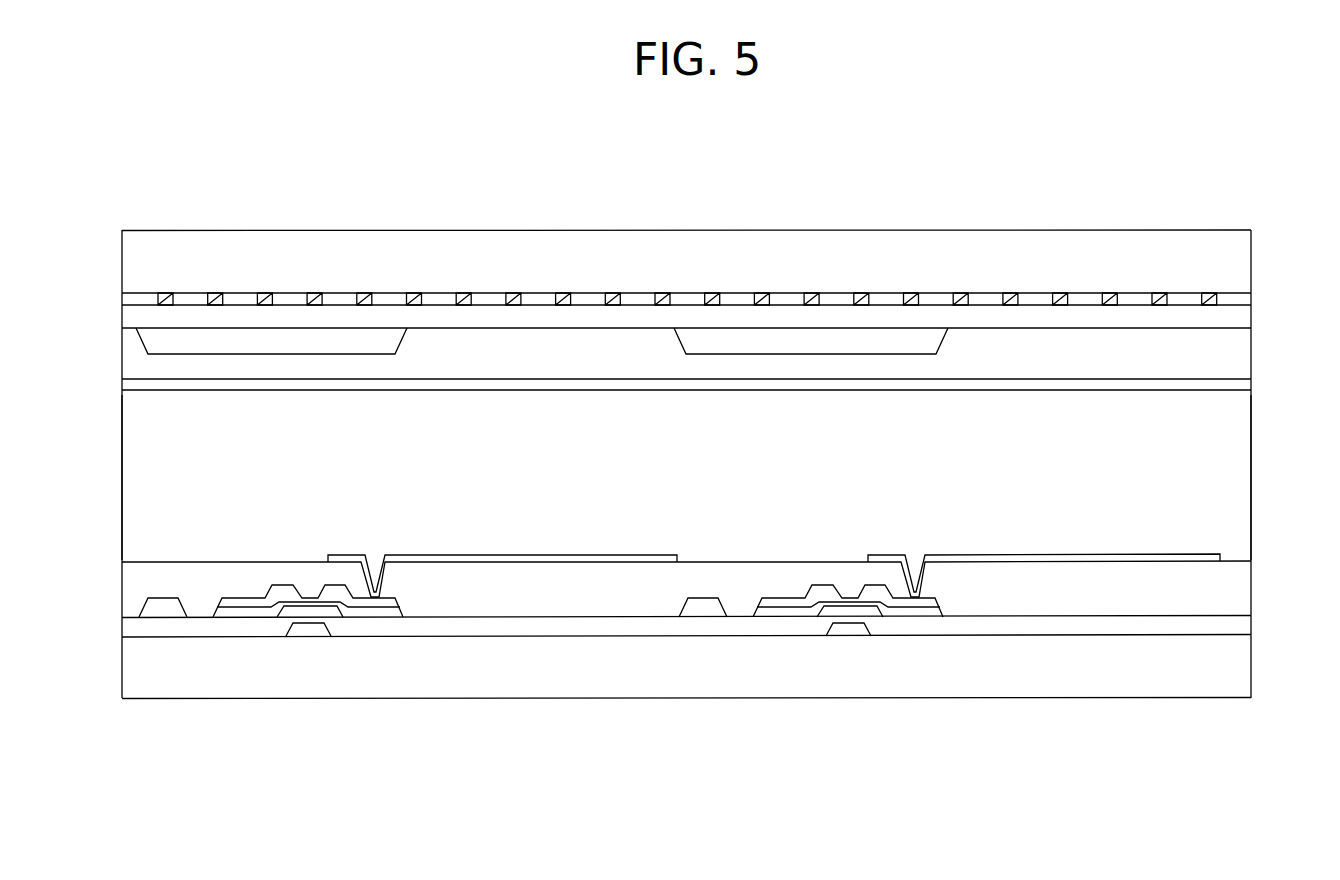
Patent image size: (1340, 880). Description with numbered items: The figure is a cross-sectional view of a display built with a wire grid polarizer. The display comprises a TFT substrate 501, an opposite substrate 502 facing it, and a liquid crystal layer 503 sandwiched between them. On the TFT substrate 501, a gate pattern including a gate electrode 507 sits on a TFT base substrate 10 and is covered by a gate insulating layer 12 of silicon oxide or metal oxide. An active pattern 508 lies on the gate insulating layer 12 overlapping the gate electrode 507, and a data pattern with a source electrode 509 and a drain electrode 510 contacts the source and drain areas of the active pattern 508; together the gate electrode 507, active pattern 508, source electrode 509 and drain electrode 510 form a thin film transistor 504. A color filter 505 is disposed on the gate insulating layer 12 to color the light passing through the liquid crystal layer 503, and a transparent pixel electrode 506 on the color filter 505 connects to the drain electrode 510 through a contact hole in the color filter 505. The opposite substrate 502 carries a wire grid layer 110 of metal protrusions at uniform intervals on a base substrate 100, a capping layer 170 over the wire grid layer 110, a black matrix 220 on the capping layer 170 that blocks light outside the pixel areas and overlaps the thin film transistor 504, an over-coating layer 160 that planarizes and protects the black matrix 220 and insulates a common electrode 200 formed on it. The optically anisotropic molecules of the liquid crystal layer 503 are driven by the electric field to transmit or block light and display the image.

The base substrate 100 is at (1247, 262).
The wire grid layer 110 is at (1216, 297).
The capping layer 170 is at (1247, 320).
The over-coating layer 160 is at (1247, 353).
The common electrode 200 is at (1247, 384).
The black matrix 220 is at (838, 340).
The liquid crystal layer 503 is at (1247, 474).
The color filter 505 is at (1247, 588).
The pixel electrode 506 is at (1027, 562).
The gate insulating layer 12 is at (1247, 624).
The TFT base substrate 10 is at (1247, 665).
The thin film transistor 504 is at (851, 694).
The gate electrode 507 is at (847, 630).
The active pattern 508 is at (852, 601).
The source electrode 509 is at (793, 603).
The drain electrode 510 is at (925, 605).
The opposite substrate 502 is at (112, 233).
The TFT substrate 501 is at (111, 563).